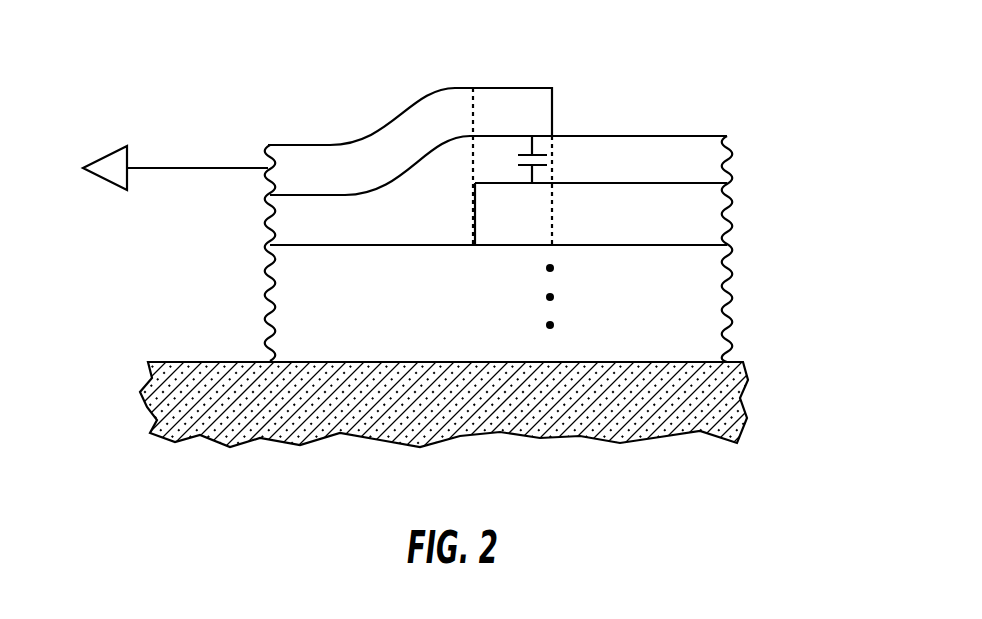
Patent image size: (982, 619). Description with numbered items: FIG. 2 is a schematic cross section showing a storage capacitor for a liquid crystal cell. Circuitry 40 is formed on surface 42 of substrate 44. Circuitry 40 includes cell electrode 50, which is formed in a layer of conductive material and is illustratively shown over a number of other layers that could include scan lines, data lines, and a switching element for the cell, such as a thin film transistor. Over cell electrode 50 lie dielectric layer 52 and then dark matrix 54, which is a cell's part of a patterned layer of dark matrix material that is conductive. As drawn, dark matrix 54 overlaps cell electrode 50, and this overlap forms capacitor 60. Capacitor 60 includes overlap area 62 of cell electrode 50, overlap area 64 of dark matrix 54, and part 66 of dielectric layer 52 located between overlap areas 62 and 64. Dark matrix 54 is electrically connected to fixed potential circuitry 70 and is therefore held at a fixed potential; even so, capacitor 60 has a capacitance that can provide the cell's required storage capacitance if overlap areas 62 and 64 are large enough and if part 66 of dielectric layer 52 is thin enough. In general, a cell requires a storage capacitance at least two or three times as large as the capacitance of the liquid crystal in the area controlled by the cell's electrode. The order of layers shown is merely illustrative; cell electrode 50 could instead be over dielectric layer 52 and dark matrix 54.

The circuitry 40 is at (248, 147).
The surface 42 is at (456, 393).
The substrate 44 is at (568, 418).
The cell electrode 50 is at (535, 227).
The dielectric layer 52 is at (732, 163).
The dark matrix 54 is at (333, 157).
The capacitor 60 is at (552, 82).
The overlap area of cell electrode 62 is at (500, 232).
The overlap area of dark matrix 64 is at (535, 108).
The part of dielectric layer 66 is at (472, 168).
The fixed potential circuitry 70 is at (110, 190).